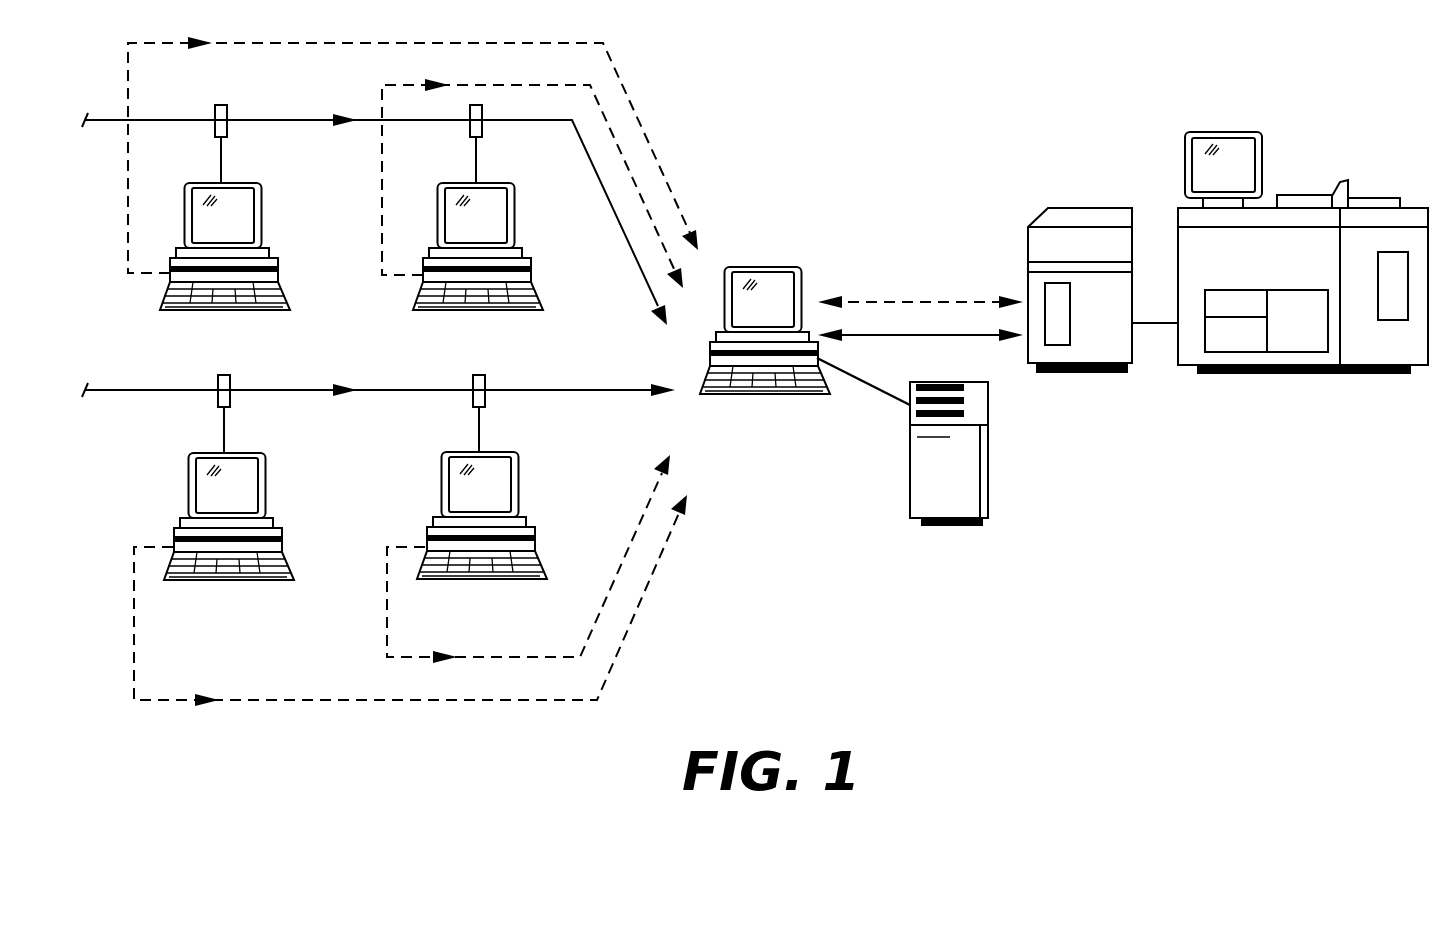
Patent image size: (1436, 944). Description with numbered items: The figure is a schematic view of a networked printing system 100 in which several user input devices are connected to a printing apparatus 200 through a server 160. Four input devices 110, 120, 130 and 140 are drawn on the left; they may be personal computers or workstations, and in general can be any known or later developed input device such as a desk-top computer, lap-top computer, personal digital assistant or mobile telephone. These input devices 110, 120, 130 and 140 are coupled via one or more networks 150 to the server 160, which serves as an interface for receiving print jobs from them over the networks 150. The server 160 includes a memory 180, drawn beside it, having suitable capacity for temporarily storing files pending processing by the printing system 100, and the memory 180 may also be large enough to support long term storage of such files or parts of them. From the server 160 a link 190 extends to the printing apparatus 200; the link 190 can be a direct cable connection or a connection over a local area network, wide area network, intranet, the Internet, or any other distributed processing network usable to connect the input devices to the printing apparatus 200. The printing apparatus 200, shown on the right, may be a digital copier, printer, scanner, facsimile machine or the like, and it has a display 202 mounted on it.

The networked printing system 100 is at (716, 62).
The input device 110 is at (262, 214).
The input device 120 is at (513, 214).
The input device 130 is at (265, 490).
The input device 140 is at (518, 488).
The network 150 is at (647, 288).
The server 160 is at (770, 268).
The memory 180 is at (910, 448).
The link 190 is at (905, 338).
The printing apparatus 200 is at (1232, 373).
The display 202 is at (1227, 132).